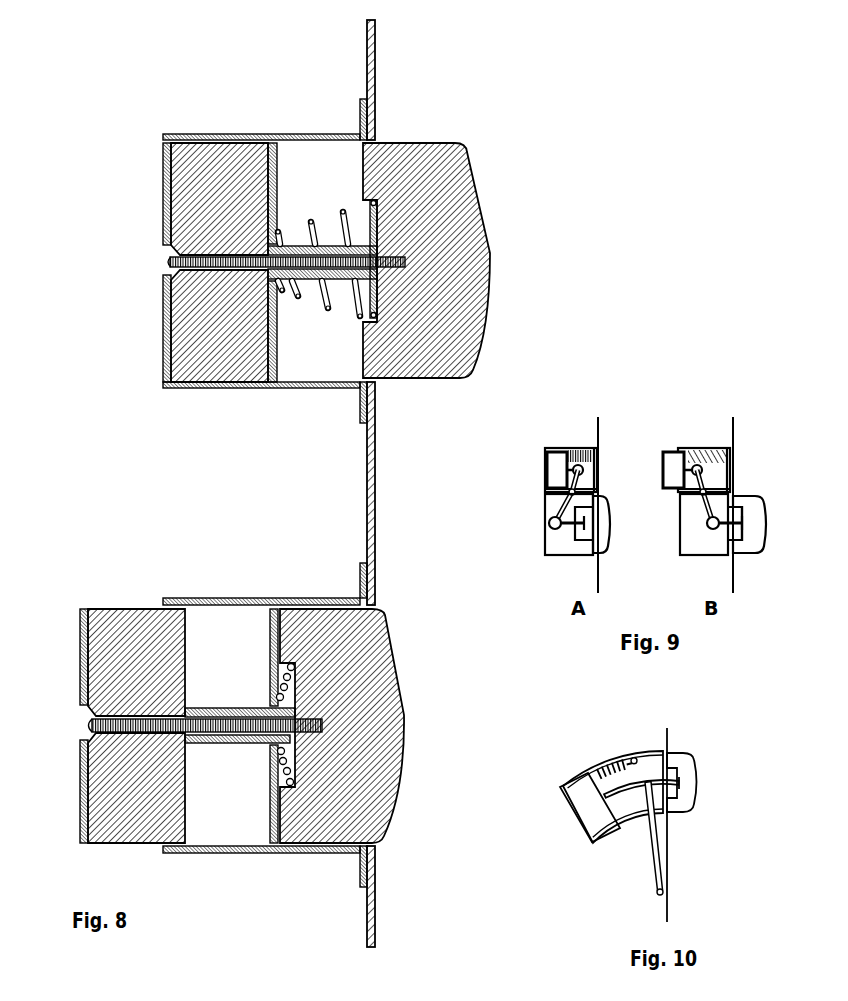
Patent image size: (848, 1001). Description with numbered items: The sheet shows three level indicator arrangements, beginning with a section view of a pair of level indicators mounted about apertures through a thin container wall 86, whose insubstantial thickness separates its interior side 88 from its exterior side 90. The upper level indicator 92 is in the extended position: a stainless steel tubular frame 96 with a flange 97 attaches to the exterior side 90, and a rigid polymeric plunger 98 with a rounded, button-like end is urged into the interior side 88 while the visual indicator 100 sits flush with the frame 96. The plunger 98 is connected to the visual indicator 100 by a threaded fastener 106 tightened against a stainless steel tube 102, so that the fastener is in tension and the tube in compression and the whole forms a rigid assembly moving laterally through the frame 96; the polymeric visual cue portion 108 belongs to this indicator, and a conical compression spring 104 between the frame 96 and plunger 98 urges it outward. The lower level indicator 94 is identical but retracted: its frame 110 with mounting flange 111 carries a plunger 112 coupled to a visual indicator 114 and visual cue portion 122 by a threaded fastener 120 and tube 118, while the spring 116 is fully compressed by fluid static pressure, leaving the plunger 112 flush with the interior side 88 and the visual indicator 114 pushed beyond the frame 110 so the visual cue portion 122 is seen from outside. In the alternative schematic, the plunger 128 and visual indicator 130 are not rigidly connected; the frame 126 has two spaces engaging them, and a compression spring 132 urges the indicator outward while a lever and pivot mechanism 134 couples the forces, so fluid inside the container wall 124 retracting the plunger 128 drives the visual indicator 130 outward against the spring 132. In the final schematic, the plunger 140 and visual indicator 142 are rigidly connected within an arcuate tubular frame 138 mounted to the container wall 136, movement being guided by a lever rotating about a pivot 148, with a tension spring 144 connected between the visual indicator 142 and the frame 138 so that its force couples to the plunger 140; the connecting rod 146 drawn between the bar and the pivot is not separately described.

In FIG. 8, the container wall 86 is at (367, 49).
In FIG. 8, the interior side 88 is at (601, 97).
In FIG. 8, the exterior side 90 is at (135, 97).
In FIG. 8, the upper level indicator 92 is at (340, 254).
In FIG. 8, the lower level indicator 94 is at (258, 715).
In FIG. 8, the tubular frame 96 is at (268, 134).
In FIG. 8, the flange 97 is at (360, 108).
In FIG. 8, the plunger 98 is at (430, 143).
In FIG. 8, the visual indicator 100 is at (163, 185).
In FIG. 8, the tube 102 is at (290, 243).
In FIG. 8, the conical compression spring 104 is at (334, 305).
In FIG. 8, the threaded fastener 106 is at (165, 271).
In FIG. 8, the visual cue portion 108 is at (197, 337).
In FIG. 8, the frame 110 is at (255, 598).
In FIG. 8, the mounting flange 111 is at (360, 578).
In FIG. 8, the plunger 112 is at (387, 627).
In FIG. 8, the visual indicator 114 is at (80, 806).
In FIG. 8, the spring 116 is at (275, 678).
In FIG. 8, the tube 118 is at (243, 745).
In FIG. 8, the threaded fastener 120 is at (82, 722).
In FIG. 8, the visual cue portion 122 is at (140, 609).
In FIG. 9A, the container wall 124 is at (598, 425).
In FIG. 9B, the container wall 124 is at (733, 425).
In FIG. 9A, the frame 126 is at (566, 557).
In FIG. 9B, the frame 126 is at (698, 557).
In FIG. 9A, the plunger 128 is at (606, 544).
In FIG. 9B, the plunger 128 is at (767, 544).
In FIG. 9A, the visual indicator 130 is at (545, 462).
In FIG. 9B, the visual indicator 130 is at (663, 462).
In FIG. 9A, the compression spring 132 is at (590, 450).
In FIG. 9B, the compression spring 132 is at (720, 448).
In FIG. 9A, the lever and pivot mechanism 134 is at (556, 498).
In FIG. 9B, the lever and pivot mechanism 134 is at (704, 500).
In FIG. 10, the container wall 136 is at (668, 893).
In FIG. 10, the tubular frame 138 is at (593, 768).
In FIG. 10, the plunger 140 is at (699, 784).
In FIG. 10, the visual indicator 142 is at (585, 830).
In FIG. 10, the tension spring 144 is at (610, 758).
In FIG. 10, the rod 146 is at (645, 847).
In FIG. 10, the pivot 148 is at (658, 894).